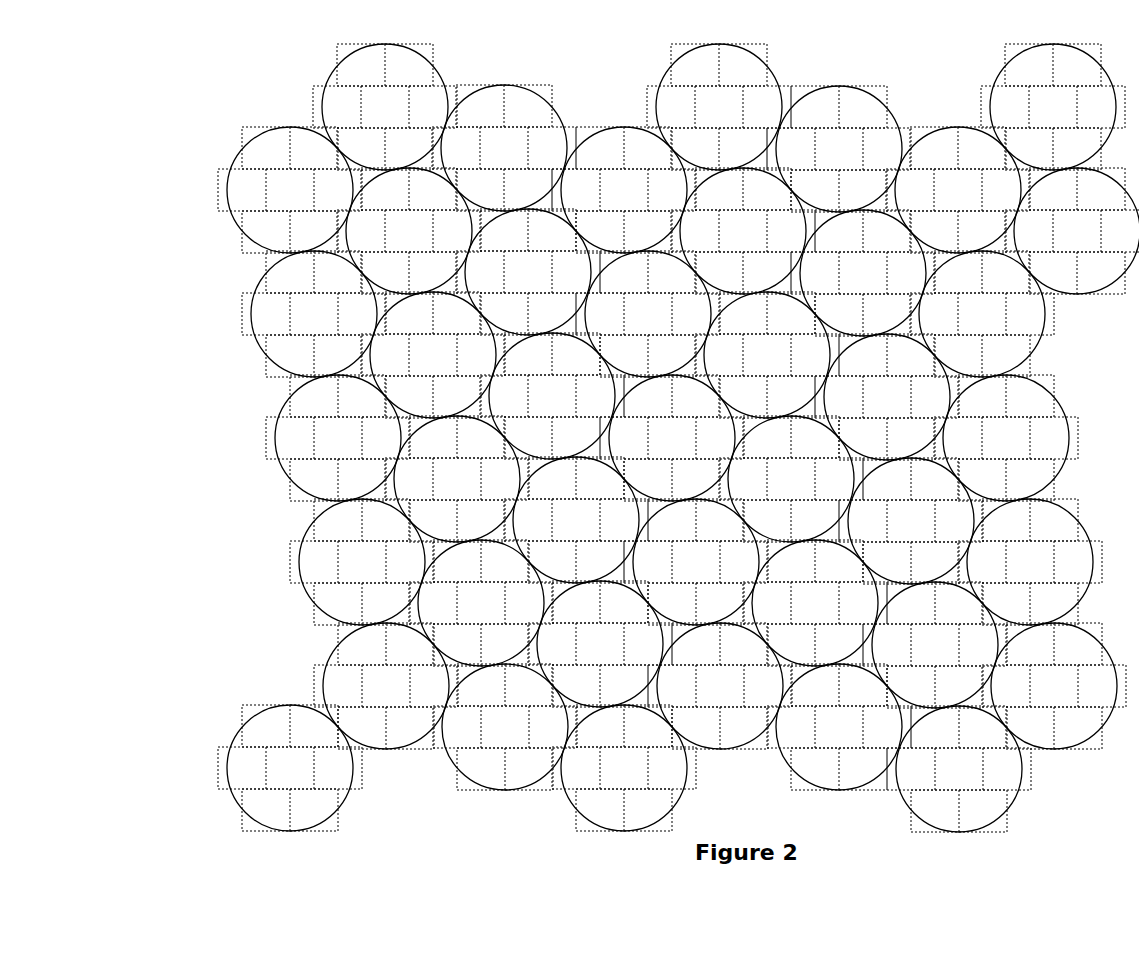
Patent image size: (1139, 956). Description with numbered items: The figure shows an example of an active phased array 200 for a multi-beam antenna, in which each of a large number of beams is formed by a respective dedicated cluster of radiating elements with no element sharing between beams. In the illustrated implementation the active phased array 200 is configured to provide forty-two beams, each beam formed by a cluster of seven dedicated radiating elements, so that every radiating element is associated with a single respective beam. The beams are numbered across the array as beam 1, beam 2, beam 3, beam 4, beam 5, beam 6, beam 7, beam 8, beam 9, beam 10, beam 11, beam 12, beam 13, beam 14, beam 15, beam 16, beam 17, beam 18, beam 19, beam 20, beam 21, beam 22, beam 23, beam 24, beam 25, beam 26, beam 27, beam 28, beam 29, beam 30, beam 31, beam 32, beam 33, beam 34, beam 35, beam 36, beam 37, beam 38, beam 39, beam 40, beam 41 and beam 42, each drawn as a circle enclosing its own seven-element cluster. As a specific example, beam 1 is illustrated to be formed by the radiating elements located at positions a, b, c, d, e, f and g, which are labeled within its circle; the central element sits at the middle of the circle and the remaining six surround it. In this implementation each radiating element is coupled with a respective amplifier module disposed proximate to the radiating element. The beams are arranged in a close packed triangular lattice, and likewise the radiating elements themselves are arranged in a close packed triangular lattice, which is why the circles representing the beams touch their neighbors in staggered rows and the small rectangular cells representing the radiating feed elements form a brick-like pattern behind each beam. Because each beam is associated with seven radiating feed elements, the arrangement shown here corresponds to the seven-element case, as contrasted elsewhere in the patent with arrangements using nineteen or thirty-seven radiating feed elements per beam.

The active phased array 200 is at (207, 68).
The beam number 1 is at (385, 107).
The beam 2 is at (719, 107).
The beam 3 is at (1053, 107).
The beam 4 is at (504, 148).
The beam 5 is at (839, 149).
The beam 6 is at (290, 190).
The beam 7 is at (624, 190).
The beam 8 is at (958, 190).
The beam 9 is at (409, 231).
The beam 10 is at (743, 231).
The beam 11 is at (1072, 231).
The beam 12 is at (528, 272).
The beam 13 is at (863, 273).
The beam 14 is at (314, 314).
The beam 15 is at (648, 314).
The beam 16 is at (982, 314).
The beam 17 is at (433, 355).
The beam 18 is at (767, 355).
The beam 19 is at (552, 396).
The beam 20 is at (887, 397).
The beam 21 is at (338, 438).
The beam 22 is at (672, 438).
The beam 23 is at (1006, 438).
The beam 24 is at (457, 479).
The beam 25 is at (791, 479).
The beam 26 is at (576, 520).
The beam 27 is at (911, 521).
The beam 28 is at (362, 562).
The beam 29 is at (696, 562).
The beam 30 is at (1030, 562).
The beam 31 is at (481, 603).
The beam 32 is at (815, 603).
The beam 33 is at (600, 644).
The beam 34 is at (935, 645).
The beam 35 is at (386, 686).
The beam 36 is at (720, 686).
The beam 37 is at (1054, 686).
The beam 38 is at (505, 727).
The beam 39 is at (839, 727).
The beam 40 is at (290, 768).
The beam 41 is at (624, 768).
The beam 42 is at (959, 769).